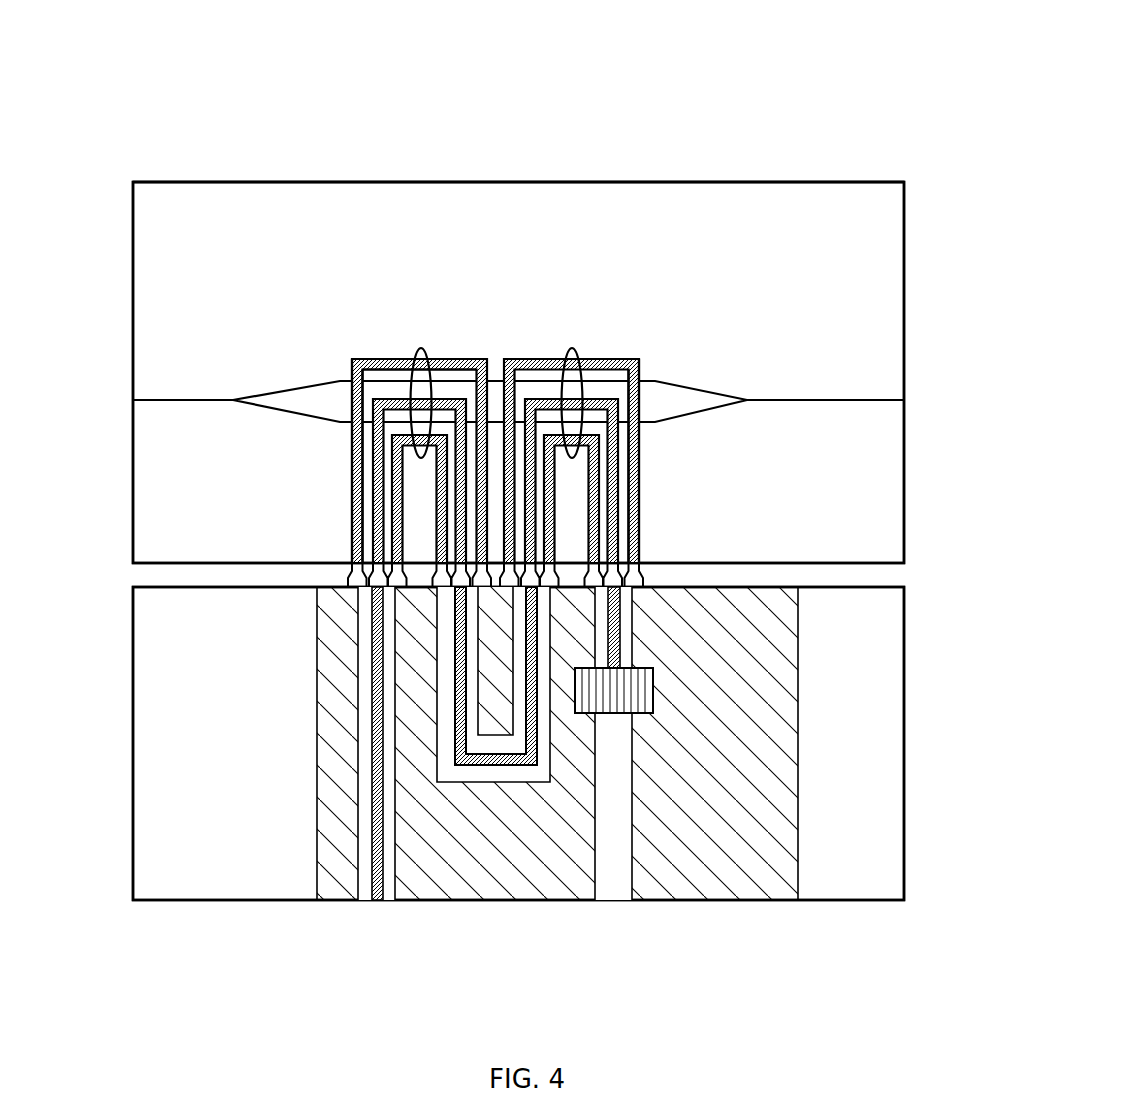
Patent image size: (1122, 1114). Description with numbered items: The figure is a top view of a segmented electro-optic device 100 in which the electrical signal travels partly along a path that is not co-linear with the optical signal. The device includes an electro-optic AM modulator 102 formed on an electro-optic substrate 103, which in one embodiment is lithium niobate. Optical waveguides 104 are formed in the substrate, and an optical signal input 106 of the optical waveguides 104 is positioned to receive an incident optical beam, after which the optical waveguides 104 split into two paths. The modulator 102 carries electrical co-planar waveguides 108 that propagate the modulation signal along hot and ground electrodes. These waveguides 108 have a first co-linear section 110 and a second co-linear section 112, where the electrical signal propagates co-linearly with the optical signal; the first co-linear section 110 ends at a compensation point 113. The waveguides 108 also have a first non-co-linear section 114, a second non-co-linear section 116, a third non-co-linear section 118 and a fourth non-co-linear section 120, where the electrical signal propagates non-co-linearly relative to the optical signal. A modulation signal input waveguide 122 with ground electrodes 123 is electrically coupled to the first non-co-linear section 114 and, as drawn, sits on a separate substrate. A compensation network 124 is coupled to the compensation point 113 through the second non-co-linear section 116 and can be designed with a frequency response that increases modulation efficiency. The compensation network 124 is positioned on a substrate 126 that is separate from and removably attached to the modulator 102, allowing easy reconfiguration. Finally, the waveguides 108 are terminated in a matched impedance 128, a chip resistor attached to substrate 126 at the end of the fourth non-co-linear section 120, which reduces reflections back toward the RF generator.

The segmented electro-optic device 100 is at (750, 48).
The electro-optic AM modulator 102 is at (905, 292).
The electro-optic substrate 103 is at (855, 202).
The optical waveguides 104 is at (160, 398).
The optical signal input 106 is at (133, 398).
The electrical co-planar waveguides 108 is at (420, 350).
The first co-linear section 110 is at (382, 347).
The second co-linear section 112 is at (620, 343).
The compensation point 113 is at (472, 358).
The first non-co-linear section 114 is at (345, 482).
The second non-co-linear section 116 is at (430, 540).
The third non-co-linear section 118 is at (565, 483).
The fourth non-co-linear section 120 is at (647, 526).
The modulation signal input waveguide 122 is at (378, 899).
The ground electrodes 123 is at (488, 647).
The compensation network 124 is at (502, 765).
The substrate 126 is at (905, 858).
The matched impedance 128 is at (640, 713).